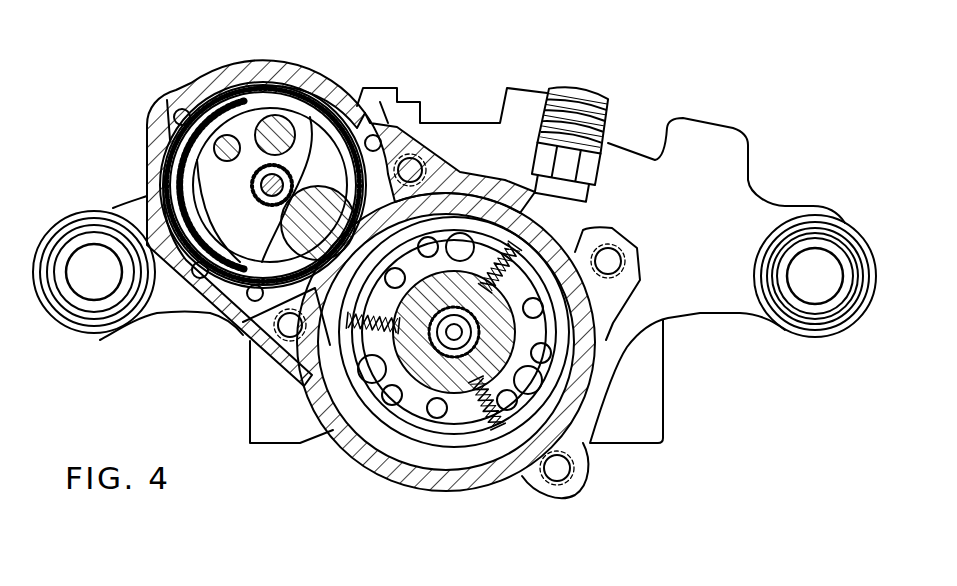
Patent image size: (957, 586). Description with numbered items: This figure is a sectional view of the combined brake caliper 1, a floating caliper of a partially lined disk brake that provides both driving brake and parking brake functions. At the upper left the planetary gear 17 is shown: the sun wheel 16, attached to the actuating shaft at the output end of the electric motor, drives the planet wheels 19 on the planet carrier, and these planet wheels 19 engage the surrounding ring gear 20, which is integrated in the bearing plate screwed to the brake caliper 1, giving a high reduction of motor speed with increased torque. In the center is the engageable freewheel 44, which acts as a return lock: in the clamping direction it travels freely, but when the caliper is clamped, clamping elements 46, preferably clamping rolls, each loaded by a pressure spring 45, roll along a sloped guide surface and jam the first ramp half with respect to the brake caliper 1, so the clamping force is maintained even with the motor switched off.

The brake caliper 1 is at (628, 142).
The sun wheel 16 is at (305, 104).
The planetary gear 17 is at (220, 100).
The planet wheels 19 is at (212, 217).
The ring gear 20 is at (178, 90).
The engageable freewheel 44 is at (394, 436).
The pressure spring 45 is at (517, 257).
The clamping elements 46 is at (388, 395).